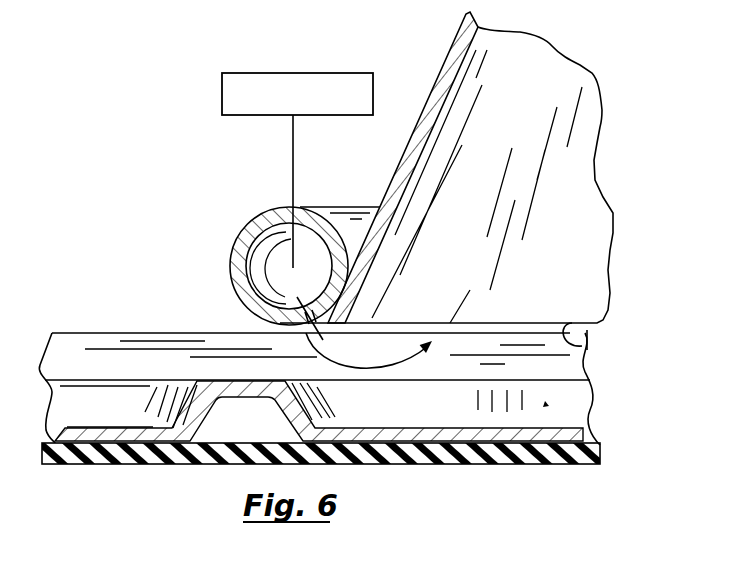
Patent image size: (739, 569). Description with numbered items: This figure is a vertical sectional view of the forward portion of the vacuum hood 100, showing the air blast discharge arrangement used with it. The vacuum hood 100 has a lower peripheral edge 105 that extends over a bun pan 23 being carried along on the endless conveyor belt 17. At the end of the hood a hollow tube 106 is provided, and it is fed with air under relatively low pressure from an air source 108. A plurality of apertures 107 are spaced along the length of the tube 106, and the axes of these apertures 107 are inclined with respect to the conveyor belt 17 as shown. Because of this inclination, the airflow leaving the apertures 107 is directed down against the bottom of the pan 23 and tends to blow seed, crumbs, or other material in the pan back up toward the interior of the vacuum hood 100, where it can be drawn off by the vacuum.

The vacuum hood 100 is at (449, 56).
The lower peripheral edge 105 is at (582, 346).
The tube 106 is at (254, 226).
The apertures 107 is at (302, 322).
The air source 108 is at (324, 73).
The bun pan 23 is at (568, 430).
The endless conveyor belt 17 is at (590, 452).